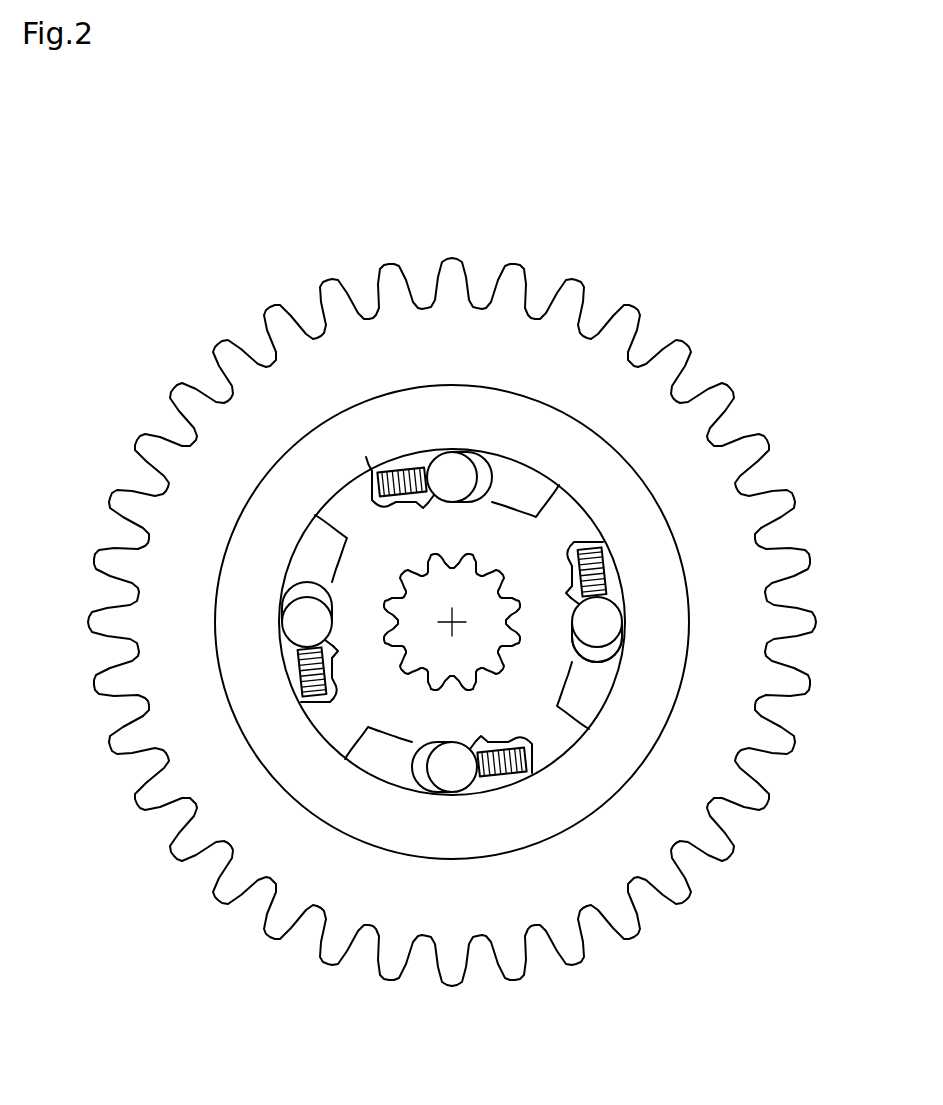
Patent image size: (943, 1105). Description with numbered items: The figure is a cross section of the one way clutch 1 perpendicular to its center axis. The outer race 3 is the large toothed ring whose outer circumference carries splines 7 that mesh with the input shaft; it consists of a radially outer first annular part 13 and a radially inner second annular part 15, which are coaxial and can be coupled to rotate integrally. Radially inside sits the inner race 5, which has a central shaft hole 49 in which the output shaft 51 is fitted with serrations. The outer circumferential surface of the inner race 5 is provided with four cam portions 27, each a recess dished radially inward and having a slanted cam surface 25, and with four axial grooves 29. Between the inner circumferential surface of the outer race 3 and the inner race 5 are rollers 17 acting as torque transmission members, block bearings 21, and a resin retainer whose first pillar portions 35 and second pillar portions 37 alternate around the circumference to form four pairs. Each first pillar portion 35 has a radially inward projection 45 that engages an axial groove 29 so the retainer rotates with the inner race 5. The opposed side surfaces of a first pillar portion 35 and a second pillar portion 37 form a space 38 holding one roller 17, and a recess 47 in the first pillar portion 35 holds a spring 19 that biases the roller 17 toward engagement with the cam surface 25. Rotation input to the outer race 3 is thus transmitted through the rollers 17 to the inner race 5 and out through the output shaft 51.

The one way clutch 1 is at (690, 200).
The outer race 3 is at (788, 293).
The inner race 5 is at (608, 690).
The splines 7 is at (572, 300).
The first annular part 13 is at (660, 384).
The second annular part 15 is at (645, 388).
The rollers 17 is at (607, 618).
The springs 19 is at (412, 473).
The block bearings 21 is at (605, 473).
The cam surface 25 is at (453, 507).
The cam portions 27 is at (469, 498).
The axial grooves 29 is at (393, 505).
The first pillar portions 35 is at (365, 478).
The second pillar portions 37 is at (530, 483).
The space 38 is at (607, 652).
The projection 45 is at (400, 503).
The recess 47 is at (385, 470).
The shaft hole 49 is at (430, 665).
The output shaft 51 is at (437, 648).